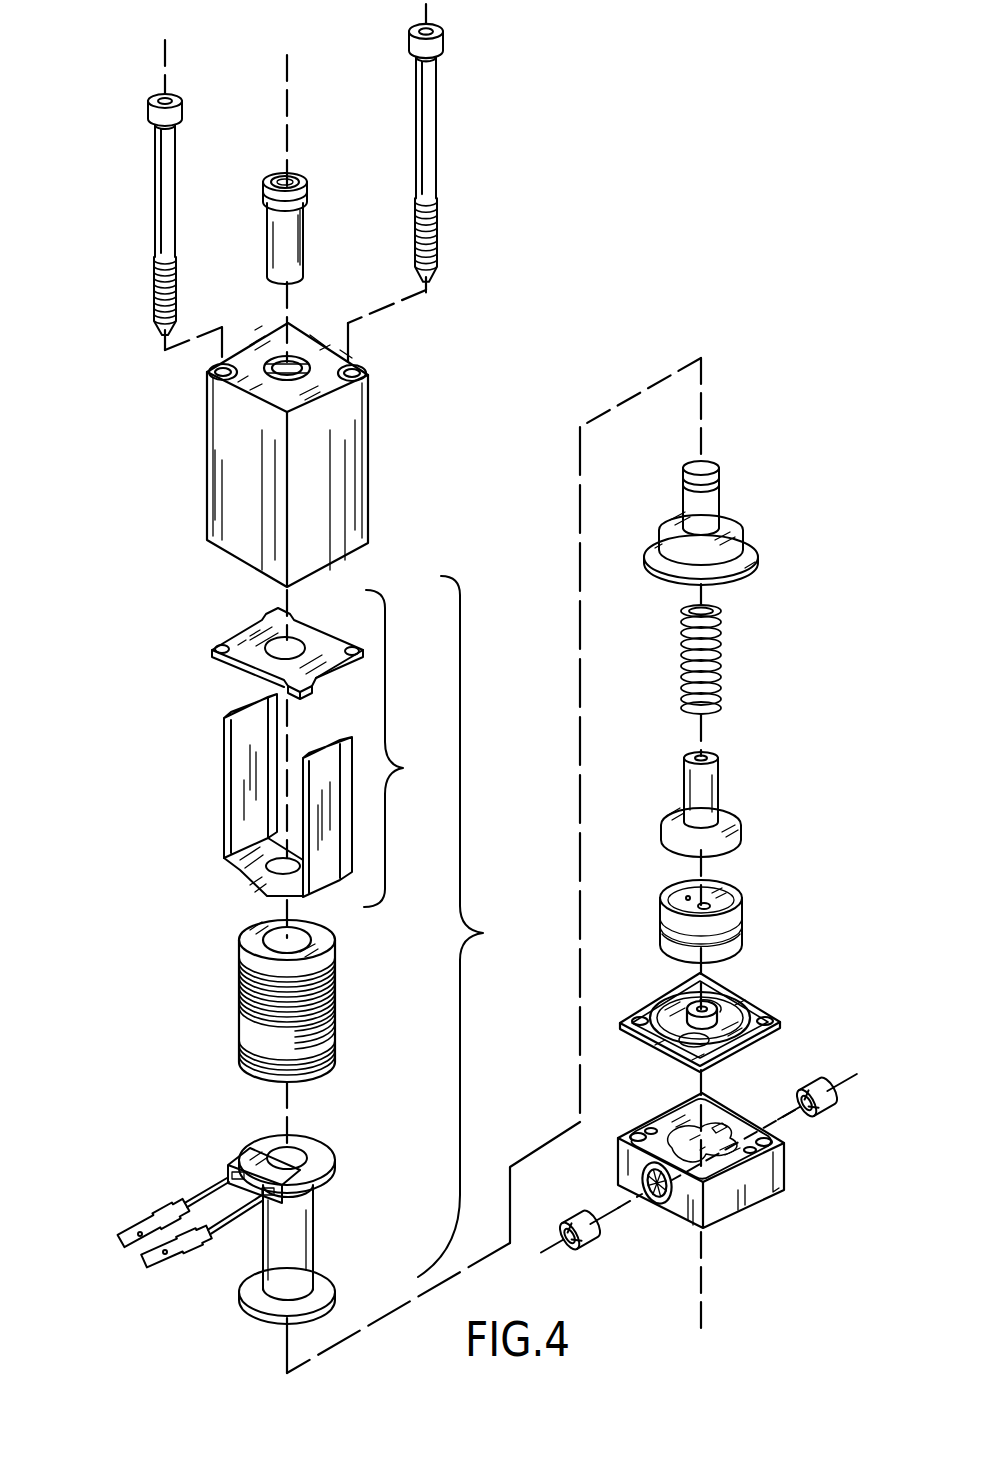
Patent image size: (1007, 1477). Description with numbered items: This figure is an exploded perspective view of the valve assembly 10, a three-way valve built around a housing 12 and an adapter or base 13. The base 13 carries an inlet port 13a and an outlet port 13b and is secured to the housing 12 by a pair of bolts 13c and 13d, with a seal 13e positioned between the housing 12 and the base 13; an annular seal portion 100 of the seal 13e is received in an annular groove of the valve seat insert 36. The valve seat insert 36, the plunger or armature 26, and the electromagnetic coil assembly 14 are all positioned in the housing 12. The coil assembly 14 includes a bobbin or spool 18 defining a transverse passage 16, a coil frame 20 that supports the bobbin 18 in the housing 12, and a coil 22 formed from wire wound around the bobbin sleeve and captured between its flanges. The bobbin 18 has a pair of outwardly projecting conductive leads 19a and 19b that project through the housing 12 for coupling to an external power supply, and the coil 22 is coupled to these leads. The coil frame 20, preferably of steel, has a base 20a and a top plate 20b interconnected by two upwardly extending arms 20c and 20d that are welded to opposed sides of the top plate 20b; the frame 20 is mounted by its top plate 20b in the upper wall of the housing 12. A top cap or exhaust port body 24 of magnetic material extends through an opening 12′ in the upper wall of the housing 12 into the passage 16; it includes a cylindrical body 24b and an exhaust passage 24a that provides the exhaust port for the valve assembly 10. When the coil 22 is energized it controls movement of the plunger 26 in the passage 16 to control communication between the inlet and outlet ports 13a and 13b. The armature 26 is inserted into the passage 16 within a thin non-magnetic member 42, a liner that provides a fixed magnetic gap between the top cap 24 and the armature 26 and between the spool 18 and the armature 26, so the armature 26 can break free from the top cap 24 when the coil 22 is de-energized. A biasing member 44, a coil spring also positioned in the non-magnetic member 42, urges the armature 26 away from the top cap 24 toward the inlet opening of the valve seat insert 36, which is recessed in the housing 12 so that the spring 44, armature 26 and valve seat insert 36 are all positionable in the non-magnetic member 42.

The valve assembly 10 is at (652, 260).
The housing 12 is at (320, 414).
The opening 12′ is at (303, 356).
The base 13 is at (699, 1164).
The inlet port 13a is at (657, 1205).
The outlet port 13b is at (748, 1128).
The bolt 13c is at (177, 148).
The bolt 13d is at (436, 147).
The seal 13e is at (744, 999).
The coil assembly 14 is at (643, 865).
The transverse passage 16 is at (272, 1157).
The bobbin 18 is at (269, 1225).
The conductive lead 19a is at (135, 1230).
The conductive lead 19b is at (166, 1268).
The coil frame 20 is at (277, 761).
The base 20a is at (231, 817).
The top plate 20b is at (243, 625).
The arm 20c is at (226, 789).
The arm 20d is at (303, 813).
The coil 22 is at (230, 1013).
The top cap 24 is at (288, 183).
The exhaust passage 24a is at (270, 178).
The cylindrical body 24b is at (299, 232).
The plunger 26 is at (731, 786).
The valve seat insert 36 is at (746, 889).
The non-magnetic member 42 is at (736, 480).
The biasing member 44 is at (729, 660).
The annular seal portion 100 is at (732, 990).